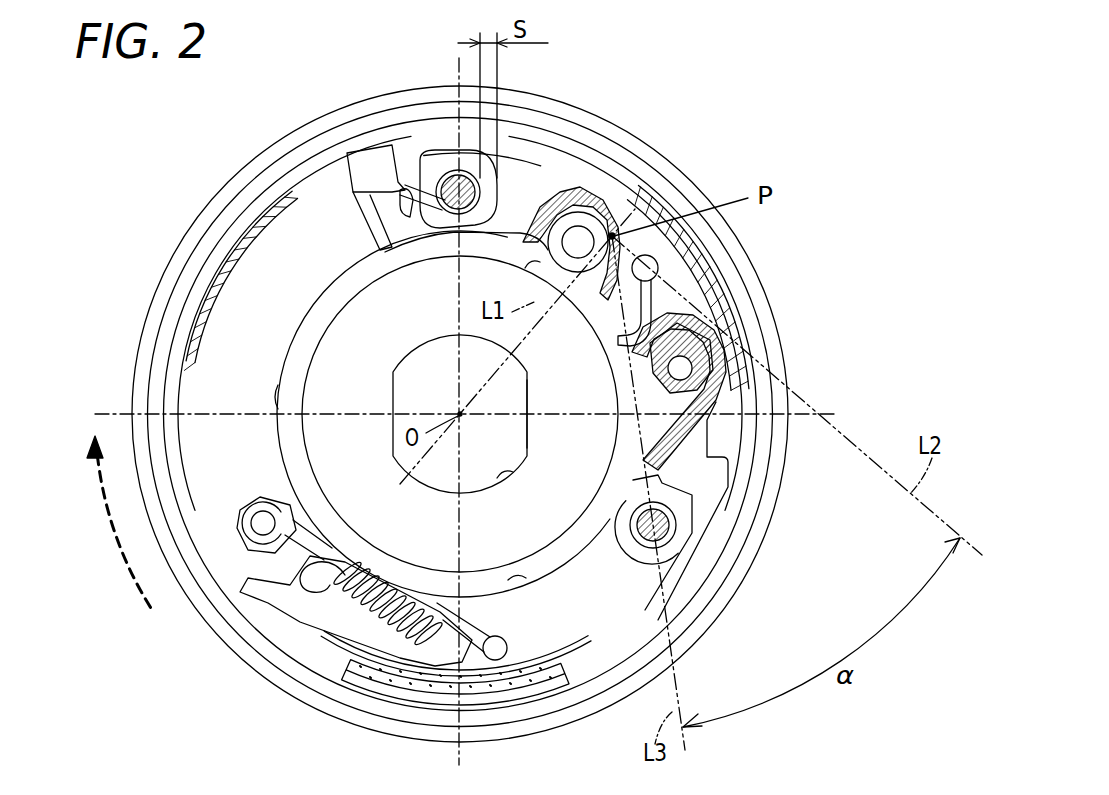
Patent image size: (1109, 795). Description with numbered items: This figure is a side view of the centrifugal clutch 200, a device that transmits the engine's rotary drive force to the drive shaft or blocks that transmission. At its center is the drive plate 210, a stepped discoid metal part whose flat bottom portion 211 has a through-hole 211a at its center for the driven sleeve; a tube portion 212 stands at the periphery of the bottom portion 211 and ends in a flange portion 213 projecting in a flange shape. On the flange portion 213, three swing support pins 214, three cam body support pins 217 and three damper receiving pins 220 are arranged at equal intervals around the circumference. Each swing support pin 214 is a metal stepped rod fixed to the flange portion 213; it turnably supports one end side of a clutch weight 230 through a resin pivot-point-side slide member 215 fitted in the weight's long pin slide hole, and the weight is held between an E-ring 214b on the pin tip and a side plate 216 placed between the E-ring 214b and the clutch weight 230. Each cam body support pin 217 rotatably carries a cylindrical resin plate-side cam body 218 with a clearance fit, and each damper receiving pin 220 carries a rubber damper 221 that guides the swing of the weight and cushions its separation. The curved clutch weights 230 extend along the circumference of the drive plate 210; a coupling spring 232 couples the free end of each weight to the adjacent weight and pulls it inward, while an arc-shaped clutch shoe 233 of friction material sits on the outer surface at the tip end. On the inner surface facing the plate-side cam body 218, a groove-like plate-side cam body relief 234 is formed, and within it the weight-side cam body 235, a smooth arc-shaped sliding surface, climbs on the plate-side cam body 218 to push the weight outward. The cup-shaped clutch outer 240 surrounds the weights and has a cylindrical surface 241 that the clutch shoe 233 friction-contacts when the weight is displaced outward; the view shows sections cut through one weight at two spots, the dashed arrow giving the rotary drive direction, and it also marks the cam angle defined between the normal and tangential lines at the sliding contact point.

The centrifugal clutch 200 is at (155, 212).
The drive plate 210 is at (396, 369).
The bottom portion 211 is at (534, 430).
The through-hole 211a is at (505, 472).
The tube portion 212 is at (347, 528).
The flange portion 213 is at (707, 502).
The swing support pin 214 is at (264, 497).
The E-ring 214b is at (283, 508).
The pivot-point-side slide member 215 is at (425, 165).
The side plate 216 is at (318, 148).
The cam body support pin 217 is at (596, 228).
The plate-side cam body 218 is at (281, 397).
The damper receiving pin 220 is at (690, 340).
The damper 221 is at (707, 347).
The clutch weight 230 is at (275, 607).
The coupling spring 232 is at (360, 613).
The clutch shoe 233 is at (177, 367).
The plate-side cam body relief 234 is at (583, 222).
The weight-side cam body 235 is at (613, 272).
The clutch outer 240 is at (512, 740).
The cylindrical surface 241 is at (743, 397).